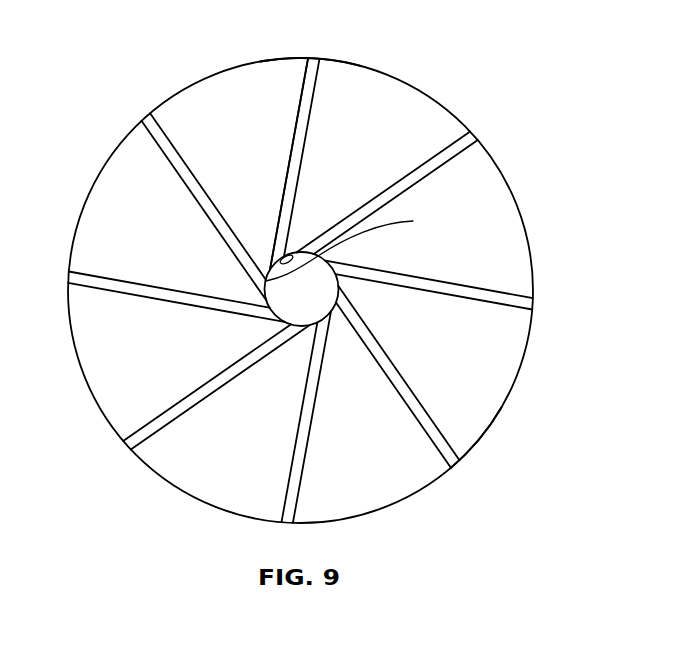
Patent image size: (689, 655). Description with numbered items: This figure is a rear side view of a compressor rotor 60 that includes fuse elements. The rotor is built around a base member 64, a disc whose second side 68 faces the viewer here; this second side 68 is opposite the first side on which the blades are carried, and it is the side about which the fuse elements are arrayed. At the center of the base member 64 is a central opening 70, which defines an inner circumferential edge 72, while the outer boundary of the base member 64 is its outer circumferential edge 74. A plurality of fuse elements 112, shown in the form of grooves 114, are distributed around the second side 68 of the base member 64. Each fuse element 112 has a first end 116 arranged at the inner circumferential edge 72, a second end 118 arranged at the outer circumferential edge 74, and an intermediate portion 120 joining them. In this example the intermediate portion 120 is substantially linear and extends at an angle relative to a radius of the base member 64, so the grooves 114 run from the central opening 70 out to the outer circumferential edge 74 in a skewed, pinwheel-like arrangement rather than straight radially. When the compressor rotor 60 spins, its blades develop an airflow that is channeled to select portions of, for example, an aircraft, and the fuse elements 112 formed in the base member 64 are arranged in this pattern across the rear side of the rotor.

The compressor rotor 60 is at (541, 455).
The base member 64 is at (464, 451).
The second side 68 is at (93, 223).
The central opening 70 is at (310, 281).
The inner circumferential edge 72 is at (352, 248).
The outer circumferential edge 74 is at (210, 77).
The fuse element 112 is at (373, 113).
The groove 114 is at (296, 126).
The first end 116 is at (300, 258).
The second end 118 is at (310, 57).
The intermediate portion 120 is at (282, 168).